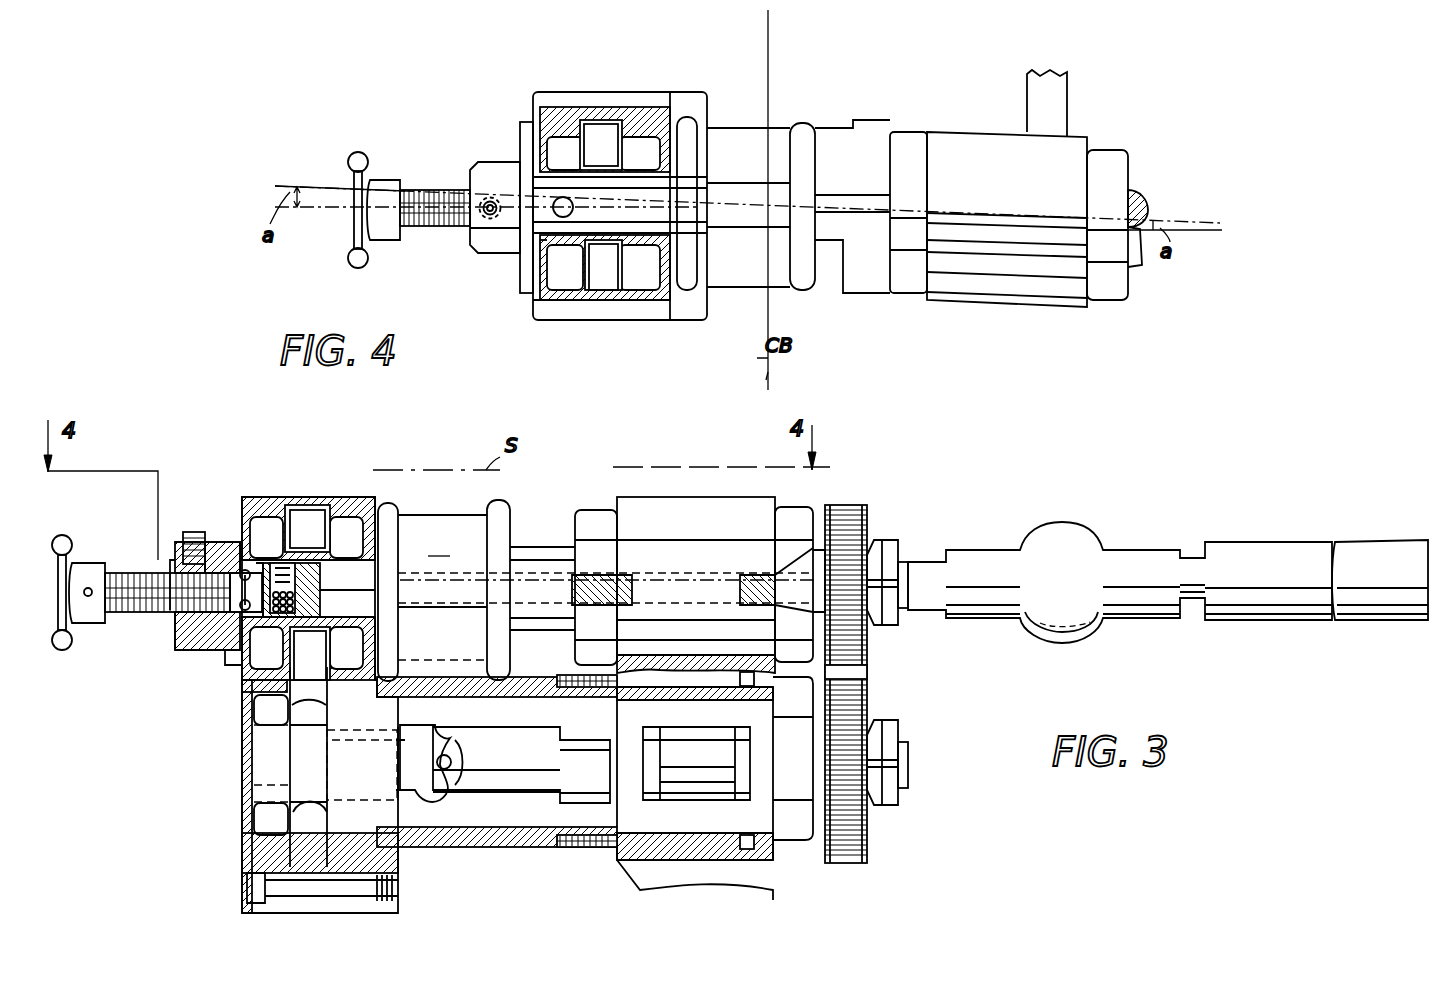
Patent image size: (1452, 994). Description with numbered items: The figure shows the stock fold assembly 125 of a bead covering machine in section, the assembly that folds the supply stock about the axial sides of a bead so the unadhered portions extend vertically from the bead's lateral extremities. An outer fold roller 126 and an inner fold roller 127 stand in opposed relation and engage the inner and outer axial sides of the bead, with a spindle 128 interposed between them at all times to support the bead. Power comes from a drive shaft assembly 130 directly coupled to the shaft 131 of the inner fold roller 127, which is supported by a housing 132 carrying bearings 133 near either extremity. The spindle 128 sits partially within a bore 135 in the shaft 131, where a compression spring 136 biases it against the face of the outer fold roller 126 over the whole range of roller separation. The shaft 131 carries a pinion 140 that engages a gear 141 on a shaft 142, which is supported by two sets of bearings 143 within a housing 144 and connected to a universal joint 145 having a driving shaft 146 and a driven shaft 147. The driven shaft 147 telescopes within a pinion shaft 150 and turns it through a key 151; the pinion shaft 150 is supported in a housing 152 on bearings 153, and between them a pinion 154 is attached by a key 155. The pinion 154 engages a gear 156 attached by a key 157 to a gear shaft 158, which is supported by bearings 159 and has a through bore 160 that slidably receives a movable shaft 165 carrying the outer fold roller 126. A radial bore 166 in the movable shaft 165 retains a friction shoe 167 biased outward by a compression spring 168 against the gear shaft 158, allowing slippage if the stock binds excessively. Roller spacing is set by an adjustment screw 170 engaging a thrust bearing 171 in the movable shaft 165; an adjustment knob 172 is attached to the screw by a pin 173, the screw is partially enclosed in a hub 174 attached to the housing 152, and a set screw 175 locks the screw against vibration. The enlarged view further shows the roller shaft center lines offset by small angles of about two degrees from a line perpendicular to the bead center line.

In FIG. 3, the stock fold assembly 125 is at (856, 490).
In FIG. 4, the outer fold roller 126 is at (705, 142).
In FIG. 3, the outer fold roller 126 is at (390, 528).
In FIG. 4, the inner fold roller 127 is at (805, 142).
In FIG. 3, the inner fold roller 127 is at (500, 522).
In FIG. 4, the spindle 128 is at (772, 190).
In FIG. 3, the spindle 128 is at (473, 592).
In FIG. 3, the drive shaft assembly 130 is at (1143, 557).
In FIG. 4, the shaft 131 is at (876, 180).
In FIG. 3, the shaft 131 is at (548, 562).
In FIG. 4, the housing 132 is at (972, 147).
In FIG. 3, the housing 132 is at (718, 480).
In FIG. 4, the bearings 133 is at (910, 148).
In FIG. 3, the bearings 133 is at (590, 522).
In FIG. 3, the bore 135 is at (718, 572).
In FIG. 3, the compression spring 136 is at (770, 590).
In FIG. 3, the pinion 140 is at (853, 613).
In FIG. 3, the gear 141 is at (853, 735).
In FIG. 3, the shaft 142 is at (724, 782).
In FIG. 3, the bearings 143 is at (635, 757).
In FIG. 3, the housing 144 is at (472, 842).
In FIG. 3, the universal joint 145 is at (428, 740).
In FIG. 3, the driving shaft 146 is at (512, 740).
In FIG. 3, the driven shaft 147 is at (417, 785).
In FIG. 3, the pinion shaft 150 is at (260, 784).
In FIG. 3, the key 151 is at (327, 748).
In FIG. 4, the housing 152 is at (650, 66).
In FIG. 3, the housing 152 is at (242, 688).
In FIG. 3, the bearings 153 is at (338, 808).
In FIG. 3, the pinion 154 is at (297, 702).
In FIG. 3, the key 155 is at (303, 813).
In FIG. 4, the gear 156 is at (607, 278).
In FIG. 3, the gear 156 is at (312, 644).
In FIG. 3, the key 157 is at (238, 663).
In FIG. 4, the gear shaft 158 is at (545, 242).
In FIG. 3, the gear shaft 158 is at (338, 618).
In FIG. 4, the bearings 159 is at (615, 150).
In FIG. 3, the bearings 159 is at (322, 531).
In FIG. 3, the through bore 160 is at (420, 612).
In FIG. 4, the movable shaft 165 is at (620, 197).
In FIG. 3, the movable shaft 165 is at (283, 543).
In FIG. 3, the radial bore 166 is at (228, 607).
In FIG. 4, the friction shoe 167 is at (555, 205).
In FIG. 3, the friction shoe 167 is at (300, 570).
In FIG. 3, the compression spring 168 is at (262, 565).
In FIG. 3, the adjustment screw 170 is at (127, 585).
In FIG. 3, the thrust bearing 171 is at (174, 643).
In FIG. 4, the adjustment knob 172 is at (382, 185).
In FIG. 3, the adjustment knob 172 is at (92, 572).
In FIG. 3, the pin 173 is at (88, 597).
In FIG. 4, the hub 174 is at (493, 165).
In FIG. 3, the hub 174 is at (233, 505).
In FIG. 4, the set screw 175 is at (483, 216).
In FIG. 3, the set screw 175 is at (173, 552).